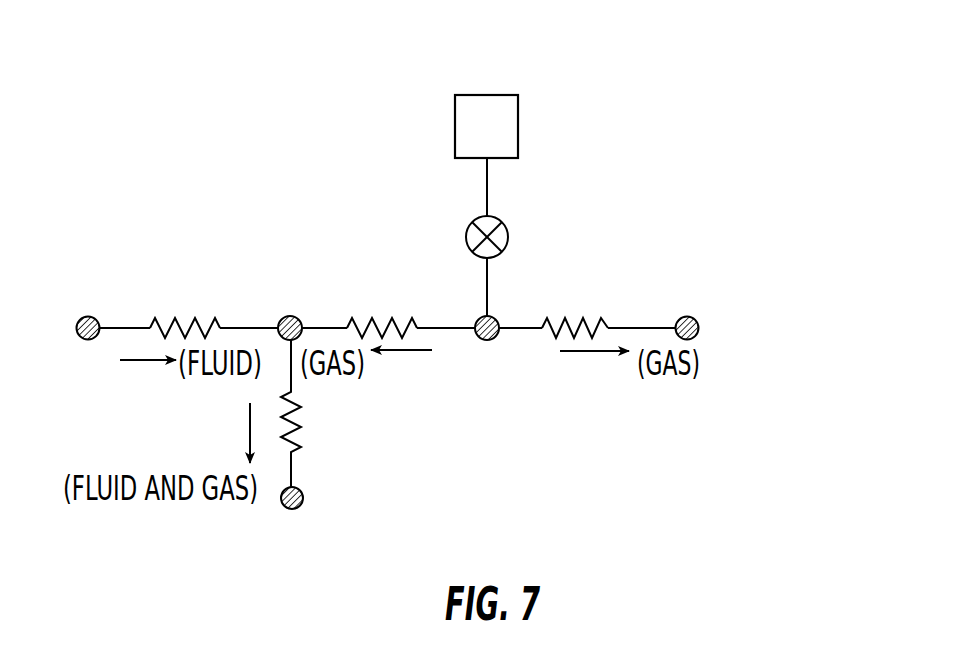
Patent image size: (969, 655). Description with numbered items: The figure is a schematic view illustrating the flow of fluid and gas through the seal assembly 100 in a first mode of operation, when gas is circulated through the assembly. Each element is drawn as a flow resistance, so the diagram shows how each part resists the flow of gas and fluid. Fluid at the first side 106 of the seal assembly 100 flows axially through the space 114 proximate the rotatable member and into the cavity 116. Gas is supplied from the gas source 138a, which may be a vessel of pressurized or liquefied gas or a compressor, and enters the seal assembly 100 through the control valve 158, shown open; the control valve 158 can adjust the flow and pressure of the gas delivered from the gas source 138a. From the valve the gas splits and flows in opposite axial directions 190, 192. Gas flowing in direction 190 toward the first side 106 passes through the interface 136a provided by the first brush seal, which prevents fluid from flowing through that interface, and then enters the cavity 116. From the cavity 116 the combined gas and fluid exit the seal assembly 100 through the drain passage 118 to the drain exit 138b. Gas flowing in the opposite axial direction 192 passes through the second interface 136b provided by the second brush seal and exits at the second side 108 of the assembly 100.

The seal assembly 100 is at (745, 107).
The first side 106 is at (63, 330).
The second side 108 is at (714, 330).
The space 114 is at (185, 305).
The cavity 116 is at (296, 306).
The drain passage 118 is at (316, 421).
The interface 136a is at (382, 305).
The second interface 136b is at (575, 305).
The gas source 138a is at (519, 126).
The drain exit 138b is at (290, 521).
The control valve 158 is at (557, 238).
The axial direction 190 is at (403, 368).
The opposite axial direction 192 is at (594, 378).